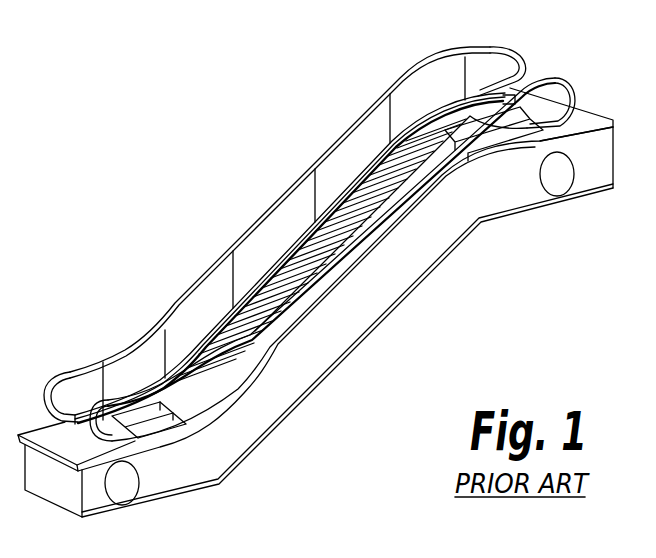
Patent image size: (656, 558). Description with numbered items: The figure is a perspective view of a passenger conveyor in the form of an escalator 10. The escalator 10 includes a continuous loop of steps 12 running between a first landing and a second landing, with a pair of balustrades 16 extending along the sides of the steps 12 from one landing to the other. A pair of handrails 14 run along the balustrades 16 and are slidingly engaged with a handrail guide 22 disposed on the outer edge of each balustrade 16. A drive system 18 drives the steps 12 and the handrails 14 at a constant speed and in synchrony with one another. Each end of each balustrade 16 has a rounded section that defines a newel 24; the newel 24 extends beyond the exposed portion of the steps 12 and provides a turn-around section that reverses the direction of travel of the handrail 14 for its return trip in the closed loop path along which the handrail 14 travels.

The escalator 10 is at (404, 317).
The steps 12 is at (307, 273).
The handrails 14 is at (380, 165).
The balustrades 16 is at (466, 125).
The drive system 18 is at (562, 172).
The handrail guide 22 is at (188, 290).
The newel 24 is at (137, 413).